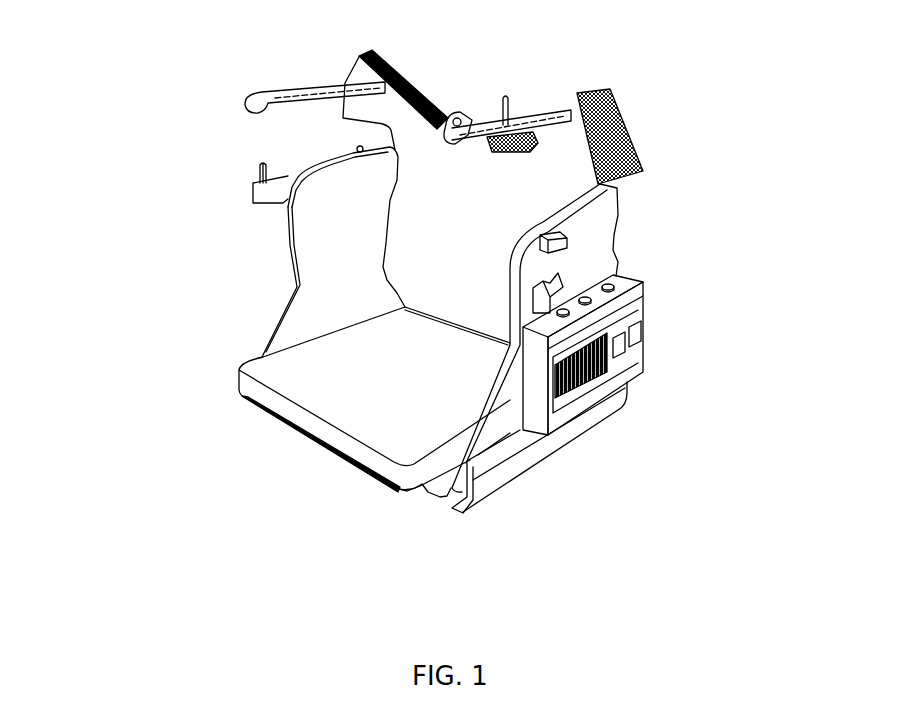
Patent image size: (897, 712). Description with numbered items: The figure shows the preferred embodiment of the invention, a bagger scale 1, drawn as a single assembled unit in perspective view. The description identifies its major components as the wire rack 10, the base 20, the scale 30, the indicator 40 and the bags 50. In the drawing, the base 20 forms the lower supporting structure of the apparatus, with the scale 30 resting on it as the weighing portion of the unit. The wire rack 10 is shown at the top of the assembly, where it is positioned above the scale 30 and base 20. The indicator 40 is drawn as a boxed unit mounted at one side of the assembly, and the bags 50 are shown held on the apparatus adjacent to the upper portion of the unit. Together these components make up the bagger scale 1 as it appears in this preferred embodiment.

The bagger scale 1 is at (607, 232).
The wire rack 10 is at (273, 100).
The base 20 is at (372, 474).
The scale 30 is at (320, 430).
The indicator 40 is at (643, 331).
The bags 50 is at (420, 146).